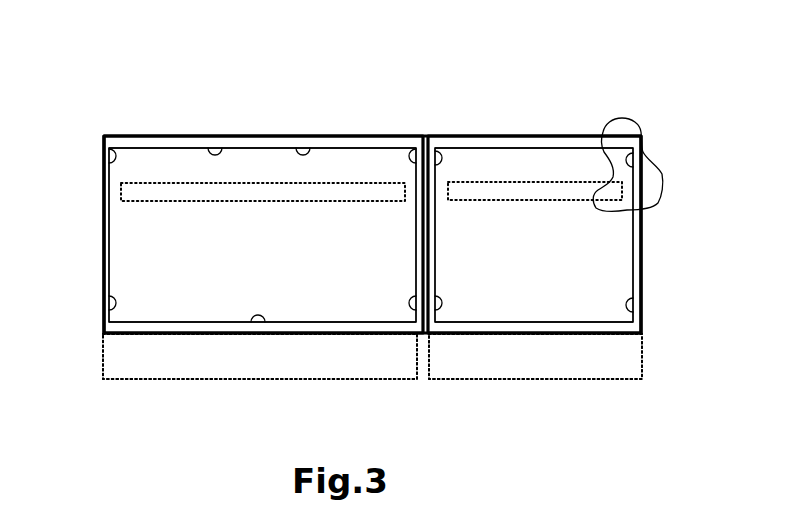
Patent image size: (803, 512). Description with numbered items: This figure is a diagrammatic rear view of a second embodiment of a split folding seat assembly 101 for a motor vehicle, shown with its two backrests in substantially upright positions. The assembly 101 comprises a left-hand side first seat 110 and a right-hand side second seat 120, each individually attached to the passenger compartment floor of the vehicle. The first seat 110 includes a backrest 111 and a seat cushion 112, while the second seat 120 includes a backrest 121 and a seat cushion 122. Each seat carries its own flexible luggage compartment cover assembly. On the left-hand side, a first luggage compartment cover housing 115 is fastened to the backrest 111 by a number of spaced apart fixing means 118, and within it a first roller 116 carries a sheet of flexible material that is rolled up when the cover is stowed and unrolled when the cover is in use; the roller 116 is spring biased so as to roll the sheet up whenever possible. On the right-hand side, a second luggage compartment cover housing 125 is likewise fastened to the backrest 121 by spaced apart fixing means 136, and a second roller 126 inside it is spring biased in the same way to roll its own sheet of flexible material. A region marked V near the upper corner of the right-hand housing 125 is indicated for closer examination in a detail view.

The split folding seat assembly 101 is at (331, 101).
The first seat 110 is at (294, 344).
The backrest 111 is at (203, 335).
The seat cushion 112 is at (225, 382).
The first luggage compartment cover housing 115 is at (262, 148).
The first roller 116 is at (193, 183).
The fixing means 118 is at (105, 335).
The second seat 120 is at (479, 343).
The backrest 121 is at (555, 335).
The seat cushion 122 is at (592, 380).
The second luggage compartment cover housing 125 is at (553, 150).
The second roller 126 is at (483, 182).
The fixing means 136 is at (628, 310).
The detail view V is at (639, 115).